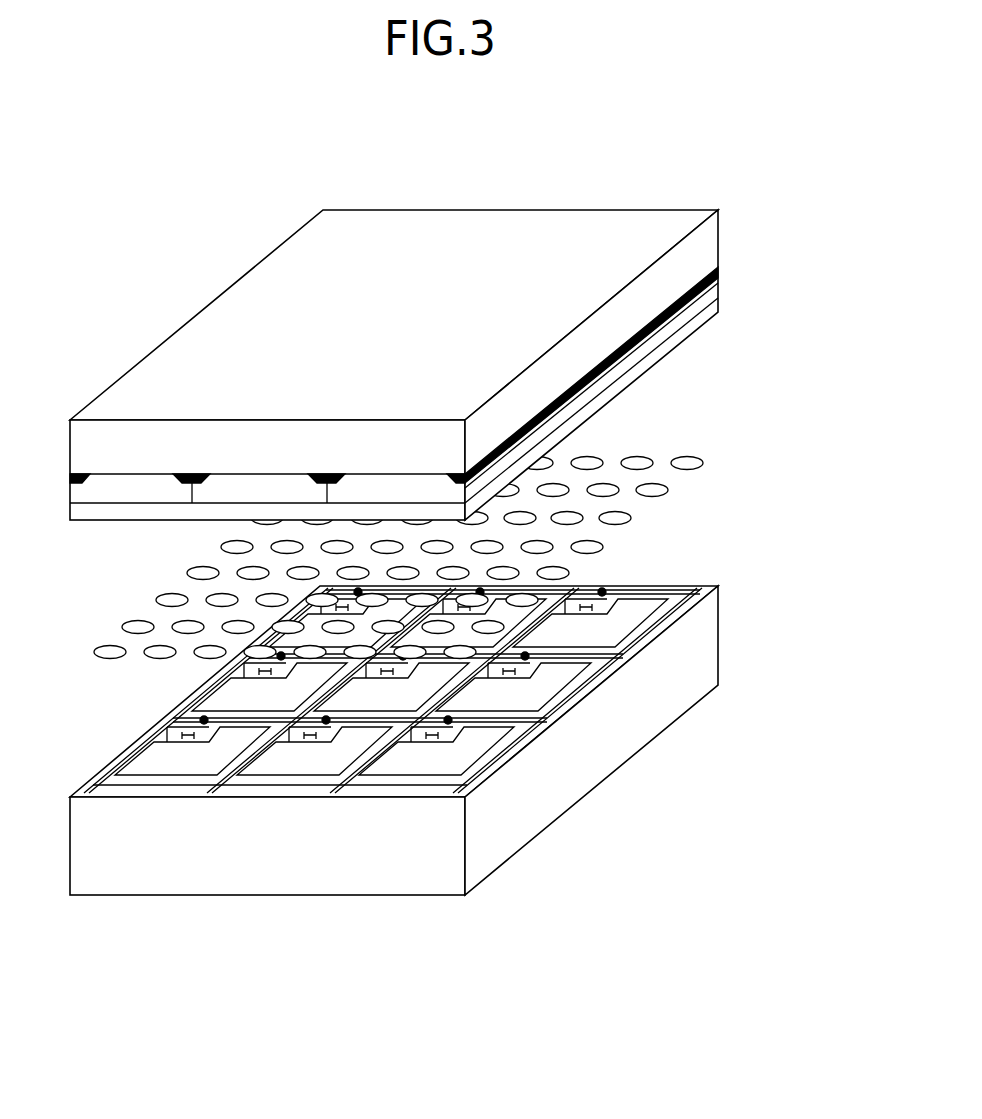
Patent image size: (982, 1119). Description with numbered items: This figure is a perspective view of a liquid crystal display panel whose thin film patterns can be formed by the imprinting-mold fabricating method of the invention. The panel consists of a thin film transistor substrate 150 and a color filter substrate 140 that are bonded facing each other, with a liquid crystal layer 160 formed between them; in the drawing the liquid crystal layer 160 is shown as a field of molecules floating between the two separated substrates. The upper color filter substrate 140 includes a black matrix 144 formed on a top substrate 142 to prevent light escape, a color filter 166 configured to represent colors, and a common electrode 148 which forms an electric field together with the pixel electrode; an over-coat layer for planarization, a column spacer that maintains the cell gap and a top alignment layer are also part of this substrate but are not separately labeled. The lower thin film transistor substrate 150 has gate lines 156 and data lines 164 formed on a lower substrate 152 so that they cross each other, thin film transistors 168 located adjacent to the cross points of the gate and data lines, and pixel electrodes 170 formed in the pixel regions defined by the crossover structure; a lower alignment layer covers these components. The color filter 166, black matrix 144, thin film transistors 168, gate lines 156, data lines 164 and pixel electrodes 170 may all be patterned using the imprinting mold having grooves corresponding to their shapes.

The color filter substrate 140 is at (443, 329).
The top substrate 142 is at (721, 242).
The black matrix 144 is at (660, 320).
The common electrode 148 is at (722, 306).
The color filter 166 is at (722, 279).
The liquid crystal layer 160 is at (686, 456).
The thin film transistor substrate 150 is at (434, 783).
The lower substrate 152 is at (722, 635).
The gate lines 156 is at (394, 787).
The data lines 164 is at (231, 780).
The thin film transistors 168 is at (440, 720).
The pixel electrodes 170 is at (497, 738).